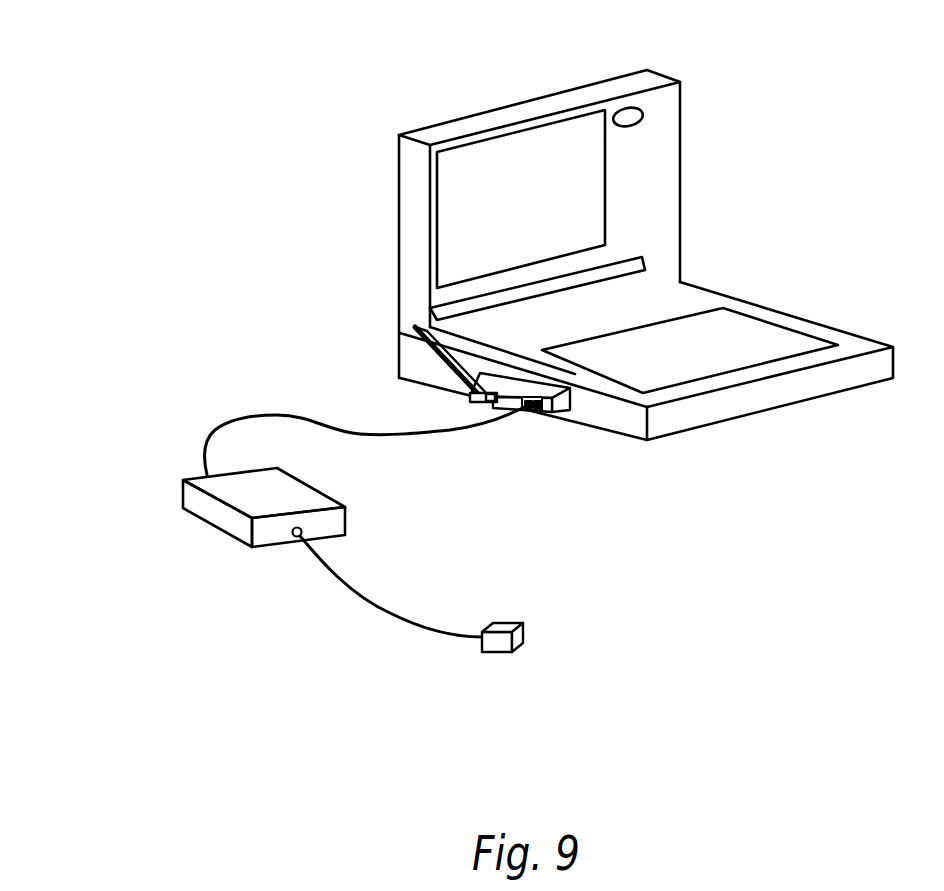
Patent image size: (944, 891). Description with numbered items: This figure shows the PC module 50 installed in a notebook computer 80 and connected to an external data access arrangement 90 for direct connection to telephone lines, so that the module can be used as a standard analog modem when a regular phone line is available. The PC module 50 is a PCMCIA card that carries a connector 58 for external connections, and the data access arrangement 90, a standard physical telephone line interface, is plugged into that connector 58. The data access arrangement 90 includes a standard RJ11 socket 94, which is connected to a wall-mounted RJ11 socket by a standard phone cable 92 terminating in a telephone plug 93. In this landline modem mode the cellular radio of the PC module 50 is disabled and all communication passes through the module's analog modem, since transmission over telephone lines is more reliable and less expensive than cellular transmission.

The portable computer 80 is at (646, 229).
The PC module 50 is at (480, 374).
The connector 58 is at (625, 454).
The external data access arrangement 90 is at (279, 475).
The RJ11 socket 94 is at (382, 510).
The phone cable 92 is at (391, 612).
The telephone plug 93 is at (572, 619).